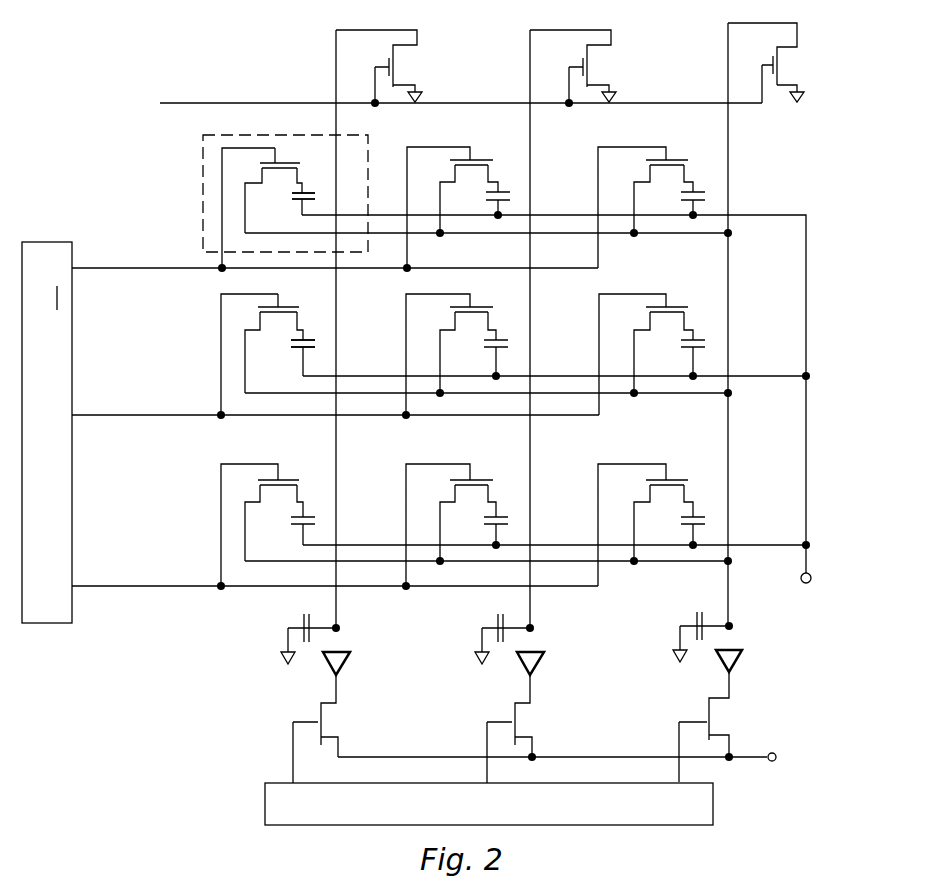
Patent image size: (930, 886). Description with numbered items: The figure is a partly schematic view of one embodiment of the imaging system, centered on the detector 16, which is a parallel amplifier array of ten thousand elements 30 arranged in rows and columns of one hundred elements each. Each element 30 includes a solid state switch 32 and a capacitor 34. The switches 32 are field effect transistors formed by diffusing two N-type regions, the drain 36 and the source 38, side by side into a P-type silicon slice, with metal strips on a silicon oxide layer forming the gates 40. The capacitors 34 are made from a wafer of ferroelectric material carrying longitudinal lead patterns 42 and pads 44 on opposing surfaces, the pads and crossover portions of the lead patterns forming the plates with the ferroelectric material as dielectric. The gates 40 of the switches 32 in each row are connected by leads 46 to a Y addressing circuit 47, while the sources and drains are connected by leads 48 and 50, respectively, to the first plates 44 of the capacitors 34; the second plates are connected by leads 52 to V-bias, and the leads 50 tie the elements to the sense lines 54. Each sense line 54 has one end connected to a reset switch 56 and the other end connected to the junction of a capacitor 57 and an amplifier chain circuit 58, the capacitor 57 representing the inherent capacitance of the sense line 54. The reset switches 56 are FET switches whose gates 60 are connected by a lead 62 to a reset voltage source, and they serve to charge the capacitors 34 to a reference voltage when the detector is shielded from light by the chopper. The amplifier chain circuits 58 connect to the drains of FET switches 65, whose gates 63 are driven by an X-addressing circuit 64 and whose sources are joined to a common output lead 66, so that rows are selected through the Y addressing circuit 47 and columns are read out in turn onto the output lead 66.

The detector 16 is at (160, 33).
The element 30 is at (198, 153).
The solid state switch 32 is at (220, 150).
The capacitor 34 is at (318, 196).
The drain 36 is at (262, 171).
The source 38 is at (303, 166).
The gate 40 is at (277, 157).
The longitudinal lead pattern 42 is at (318, 201).
The pad 44 is at (292, 200).
The lead 46 is at (100, 268).
The Y addressing circuit 47 is at (47, 432).
The lead 48 is at (296, 193).
The lead 50 is at (636, 234).
The lead 52 is at (540, 215).
The sense line 54 is at (337, 330).
The reset switch 56 is at (404, 68).
The capacitor 57 is at (300, 626).
The amplifier chain circuit 58 is at (352, 658).
The gate 60 is at (776, 62).
The lead 62 is at (230, 103).
The gate 63 is at (690, 722).
The X-addressing circuit 64 is at (622, 815).
The FET switch 65 is at (725, 719).
The output lead 66 is at (745, 757).